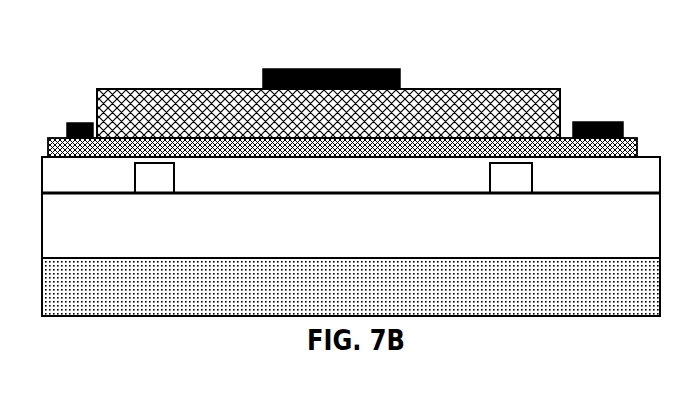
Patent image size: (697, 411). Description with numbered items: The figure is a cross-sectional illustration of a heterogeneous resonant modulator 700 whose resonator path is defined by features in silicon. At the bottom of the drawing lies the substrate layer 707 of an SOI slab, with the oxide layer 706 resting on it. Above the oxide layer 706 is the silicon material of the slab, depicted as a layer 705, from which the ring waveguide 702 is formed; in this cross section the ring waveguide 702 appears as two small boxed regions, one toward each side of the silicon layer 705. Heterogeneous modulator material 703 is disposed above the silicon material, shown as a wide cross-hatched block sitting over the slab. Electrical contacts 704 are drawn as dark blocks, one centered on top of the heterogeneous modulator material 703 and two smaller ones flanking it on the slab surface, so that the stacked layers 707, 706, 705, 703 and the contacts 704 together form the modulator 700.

The modulator 700 is at (88, 63).
The ring waveguide 702 is at (333, 178).
The heterogeneous modulator material 703 is at (328, 113).
The electrical contacts 704 is at (591, 107).
The semiconductor layer 705 is at (351, 175).
The oxide layer 706 is at (351, 225).
The substrate layer 707 is at (351, 287).